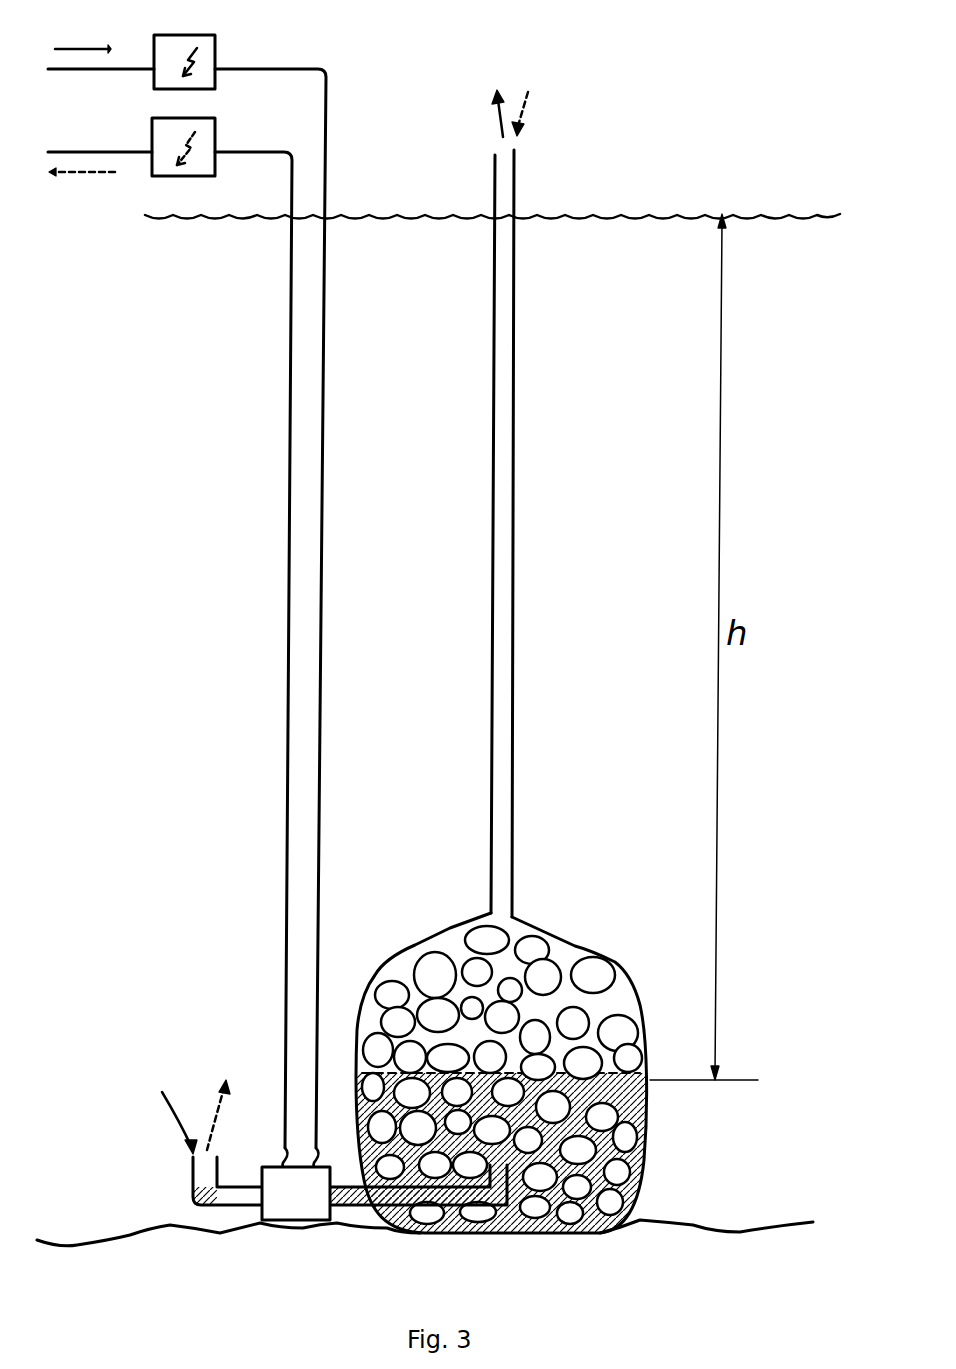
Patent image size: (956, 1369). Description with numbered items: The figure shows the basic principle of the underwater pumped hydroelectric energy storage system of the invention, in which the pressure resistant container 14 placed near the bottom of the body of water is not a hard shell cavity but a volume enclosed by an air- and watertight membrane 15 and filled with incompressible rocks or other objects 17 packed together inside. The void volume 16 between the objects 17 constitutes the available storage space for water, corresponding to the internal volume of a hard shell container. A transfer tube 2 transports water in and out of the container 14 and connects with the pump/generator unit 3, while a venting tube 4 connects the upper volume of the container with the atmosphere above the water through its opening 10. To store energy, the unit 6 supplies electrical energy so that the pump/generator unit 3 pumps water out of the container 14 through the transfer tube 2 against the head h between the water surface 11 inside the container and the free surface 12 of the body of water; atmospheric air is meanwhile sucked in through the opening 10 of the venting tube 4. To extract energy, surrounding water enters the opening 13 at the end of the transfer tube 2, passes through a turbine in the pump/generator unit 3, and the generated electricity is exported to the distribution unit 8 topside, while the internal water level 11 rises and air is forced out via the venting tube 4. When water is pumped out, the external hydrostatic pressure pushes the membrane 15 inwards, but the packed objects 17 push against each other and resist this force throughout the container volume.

The transfer tube 2 is at (432, 1232).
The pump/generator unit 3 is at (292, 1200).
The venting tube 4 is at (505, 510).
The unit 6 is at (172, 48).
The distribution unit 8 is at (202, 165).
The opening of the venting tube 10 is at (530, 130).
The water surface inside the container 11 is at (490, 1052).
The free surface of the body of water 12 is at (377, 210).
The opening at the end of the tube 13 is at (175, 1122).
The pressure resistant container 14 is at (478, 985).
The air- and watertight membrane 15 is at (648, 1170).
The void volume 16 is at (600, 1005).
The incompressible rocks or other objects 17 is at (590, 975).